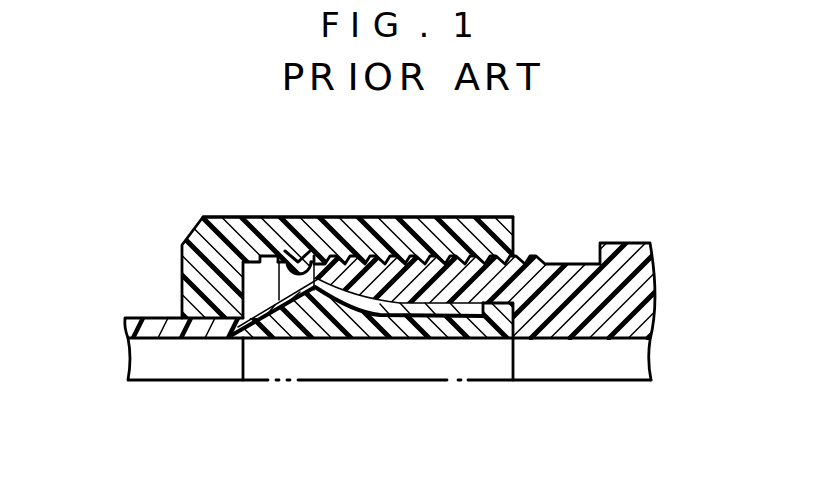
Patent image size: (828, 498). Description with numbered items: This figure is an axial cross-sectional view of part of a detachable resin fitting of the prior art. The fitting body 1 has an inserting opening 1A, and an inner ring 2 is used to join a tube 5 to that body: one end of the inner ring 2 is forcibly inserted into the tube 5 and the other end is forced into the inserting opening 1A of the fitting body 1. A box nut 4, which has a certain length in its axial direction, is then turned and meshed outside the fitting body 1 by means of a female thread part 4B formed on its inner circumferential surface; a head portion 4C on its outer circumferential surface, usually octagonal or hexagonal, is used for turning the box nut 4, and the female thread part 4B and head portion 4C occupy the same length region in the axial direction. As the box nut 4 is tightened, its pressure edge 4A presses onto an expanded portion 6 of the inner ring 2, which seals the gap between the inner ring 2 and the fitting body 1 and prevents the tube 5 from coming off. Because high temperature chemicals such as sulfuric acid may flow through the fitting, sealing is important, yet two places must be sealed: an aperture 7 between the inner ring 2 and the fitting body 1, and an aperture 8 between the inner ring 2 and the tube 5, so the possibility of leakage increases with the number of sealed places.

The fitting body 1 is at (621, 238).
The inserting opening 1A is at (459, 339).
The inner ring 2 is at (396, 348).
The box nut 4 is at (386, 214).
The pressure edge 4A is at (230, 304).
The female thread part 4B is at (308, 252).
The head portion 4C is at (477, 225).
The tube 5 is at (147, 313).
The expanded portion 6 is at (325, 316).
The aperture 7 is at (553, 339).
The aperture 8 is at (283, 258).